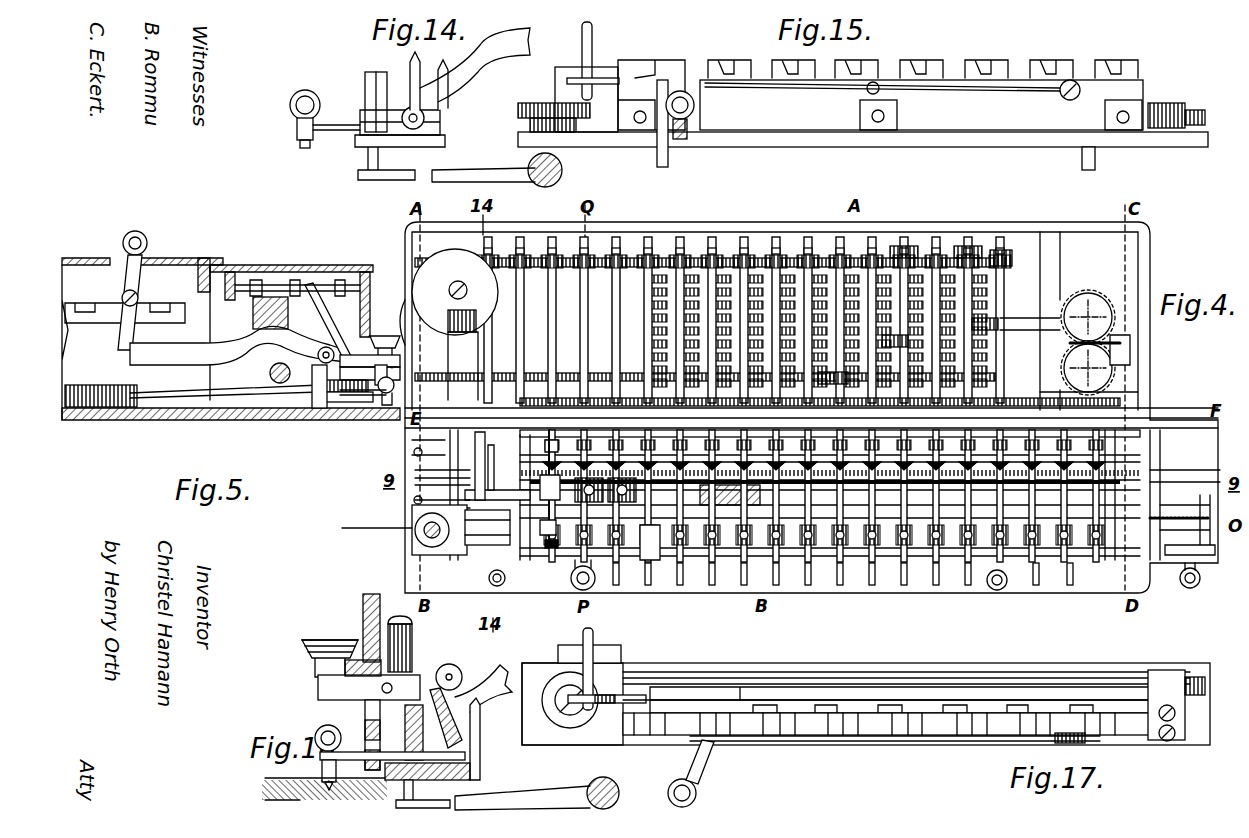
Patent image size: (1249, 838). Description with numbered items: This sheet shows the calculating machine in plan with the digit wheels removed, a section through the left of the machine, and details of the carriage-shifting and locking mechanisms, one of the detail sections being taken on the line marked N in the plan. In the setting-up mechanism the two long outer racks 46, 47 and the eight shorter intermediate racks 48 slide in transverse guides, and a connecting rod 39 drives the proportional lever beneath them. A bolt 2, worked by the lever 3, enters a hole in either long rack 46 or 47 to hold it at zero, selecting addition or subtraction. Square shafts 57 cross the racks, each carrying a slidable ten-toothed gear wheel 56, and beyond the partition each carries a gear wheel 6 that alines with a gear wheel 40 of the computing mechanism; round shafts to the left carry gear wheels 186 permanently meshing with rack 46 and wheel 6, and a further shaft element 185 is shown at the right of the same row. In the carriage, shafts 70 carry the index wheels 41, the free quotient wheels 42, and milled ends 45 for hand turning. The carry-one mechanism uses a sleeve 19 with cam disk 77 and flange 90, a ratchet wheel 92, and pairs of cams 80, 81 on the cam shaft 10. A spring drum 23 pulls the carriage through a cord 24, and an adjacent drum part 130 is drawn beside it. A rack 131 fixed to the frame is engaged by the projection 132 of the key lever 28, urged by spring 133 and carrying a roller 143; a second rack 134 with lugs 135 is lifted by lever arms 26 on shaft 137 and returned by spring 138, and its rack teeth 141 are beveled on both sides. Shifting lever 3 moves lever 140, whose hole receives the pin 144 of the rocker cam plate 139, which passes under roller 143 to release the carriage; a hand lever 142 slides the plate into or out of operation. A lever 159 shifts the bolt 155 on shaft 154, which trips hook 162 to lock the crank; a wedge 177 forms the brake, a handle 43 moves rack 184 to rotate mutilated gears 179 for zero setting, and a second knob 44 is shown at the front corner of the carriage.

In FIG. 5, the bolt 2 is at (88, 312).
In FIG. 5, the lever 3 is at (140, 238).
In FIG. 4, the lever 3 is at (470, 310).
In FIG. 4, the ten-toothed gear wheel 6 is at (940, 408).
In FIG. 5, the shaft 10 is at (280, 383).
In FIG. 4, the shaft 10 is at (440, 475).
In FIG. 4, the sleeve 19 is at (1122, 422).
In FIG. 5, the drum 23 is at (92, 398).
In FIG. 4, the drum 23 is at (455, 292).
In FIG. 5, the chain or cord 24 is at (233, 392).
In FIG. 4, the chain or cord 24 is at (447, 470).
In FIG. 15, the lever arms 26 is at (492, 170).
In FIG. 17, the lever arms 26 is at (525, 795).
In FIG. 5, the key lever 28 is at (385, 335).
In FIG. 4, the key lever 28 is at (578, 585).
In FIG. 16, the key lever 28 is at (325, 690).
In FIG. 4, the connecting rod 39 is at (1018, 325).
In FIG. 4, the ten-toothed gear wheel 40 is at (1080, 408).
In FIG. 4, the index wheel 41 is at (1100, 485).
In FIG. 4, the index wheel 42 is at (862, 548).
In FIG. 4, the handle 43 is at (996, 585).
In FIG. 4, the ball 44 is at (1195, 587).
In FIG. 4, the milled ends 45 is at (622, 560).
In FIG. 4, the rack 46 is at (420, 262).
In FIG. 4, the rack 47 is at (440, 377).
In FIG. 4, the intermediate racks 48 is at (652, 296).
In FIG. 4, the ten-toothed gear wheel 56 is at (990, 318).
In FIG. 4, the square shaft 57 is at (716, 250).
In FIG. 4, the shaft 70 is at (830, 505).
In FIG. 4, the cam disk 77 is at (542, 487).
In FIG. 4, the cam 80 is at (476, 440).
In FIG. 4, the cam 81 is at (487, 456).
In FIG. 4, the flange 90 is at (600, 463).
In FIG. 4, the ten-toothed ratchet wheel 92 is at (612, 494).
In FIG. 15, the pulley 130 is at (532, 100).
In FIG. 5, the pulley 130 is at (332, 392).
In FIG. 4, the pulley 130 is at (432, 526).
In FIG. 17, the pulley 130 is at (545, 720).
In FIG. 14, the rack 131 is at (382, 80).
In FIG. 15, the rack 131 is at (657, 70).
In FIG. 5, the rack 131 is at (350, 398).
In FIG. 4, the rack 131 is at (460, 548).
In FIG. 16, the rack 131 is at (458, 695).
In FIG. 17, the rack 131 is at (865, 718).
In FIG. 16, the projection 132 is at (418, 705).
In FIG. 16, the spring 133 is at (390, 636).
In FIG. 14, the second rack 134 is at (366, 102).
In FIG. 15, the second rack 134 is at (985, 40).
In FIG. 16, the second rack 134 is at (405, 732).
In FIG. 17, the second rack 134 is at (775, 725).
In FIG. 15, the lugs 135 is at (665, 162).
In FIG. 16, the lugs 135 is at (403, 790).
In FIG. 15, the shaft 137 is at (562, 168).
In FIG. 17, the shaft 137 is at (612, 797).
In FIG. 15, the spring 138 is at (937, 90).
In FIG. 17, the spring 138 is at (965, 740).
In FIG. 14, the rocker cam plate 139 is at (420, 72).
In FIG. 15, the rocker cam plate 139 is at (728, 62).
In FIG. 16, the rocker cam plate 139 is at (480, 728).
In FIG. 17, the rocker cam plate 139 is at (790, 698).
In FIG. 14, the lever 140 is at (485, 45).
In FIG. 15, the lever 140 is at (590, 45).
In FIG. 5, the lever 140 is at (183, 368).
In FIG. 16, the lever 140 is at (502, 682).
In FIG. 17, the lever 140 is at (592, 640).
In FIG. 15, the tooth 141 is at (888, 66).
In FIG. 17, the tooth 141 is at (825, 706).
In FIG. 14, the hand lever 142 is at (300, 110).
In FIG. 15, the hand lever 142 is at (680, 115).
In FIG. 5, the hand lever 142 is at (386, 395).
In FIG. 4, the hand lever 142 is at (492, 585).
In FIG. 16, the hand lever 142 is at (325, 760).
In FIG. 17, the hand lever 142 is at (696, 794).
In FIG. 5, the roller 143 is at (320, 350).
In FIG. 16, the roller 143 is at (452, 664).
In FIG. 15, the pin 144 is at (600, 78).
In FIG. 17, the pin 144 is at (610, 705).
In FIG. 4, the shaft 154 is at (550, 545).
In FIG. 4, the bolt 155 is at (534, 480).
In FIG. 5, the lever 159 is at (312, 292).
In FIG. 4, the lever 159 is at (543, 535).
In FIG. 4, the hook 162 is at (528, 492).
In FIG. 4, the wedge 177 is at (1108, 328).
In FIG. 4, the mutilated gear wheel 179 is at (645, 560).
In FIG. 4, the rack 184 is at (1105, 545).
In FIG. 4, the rod 185 is at (1012, 255).
In FIG. 4, the ten-toothed gear wheel 186 is at (495, 258).
In FIG. 4, the section line N—O N is at (367, 527).